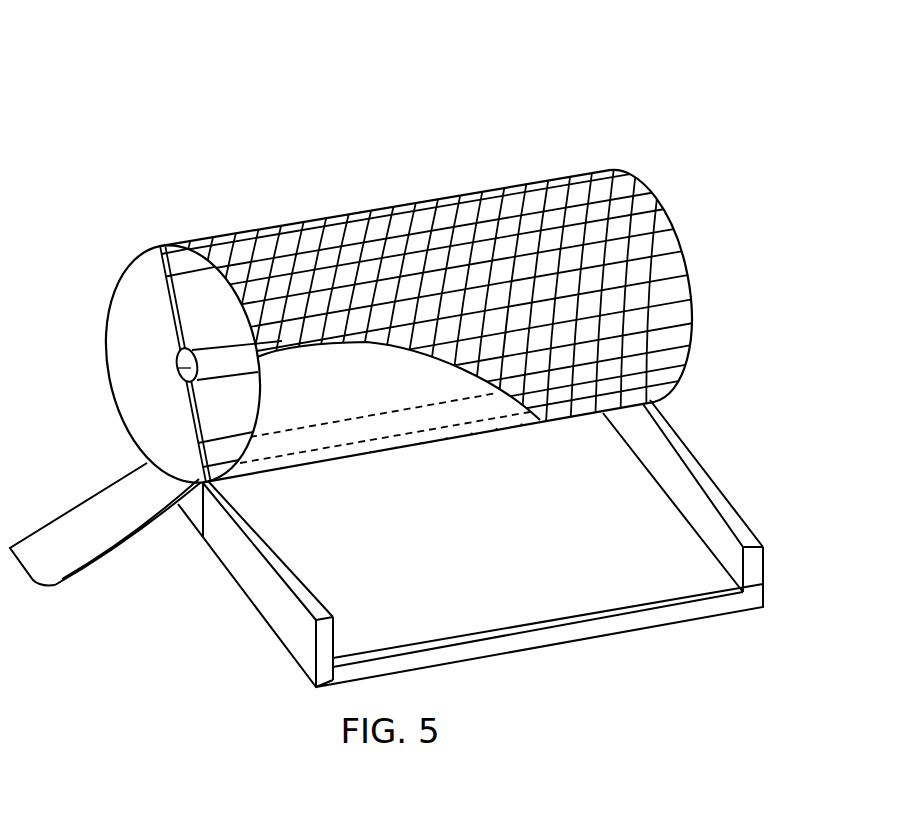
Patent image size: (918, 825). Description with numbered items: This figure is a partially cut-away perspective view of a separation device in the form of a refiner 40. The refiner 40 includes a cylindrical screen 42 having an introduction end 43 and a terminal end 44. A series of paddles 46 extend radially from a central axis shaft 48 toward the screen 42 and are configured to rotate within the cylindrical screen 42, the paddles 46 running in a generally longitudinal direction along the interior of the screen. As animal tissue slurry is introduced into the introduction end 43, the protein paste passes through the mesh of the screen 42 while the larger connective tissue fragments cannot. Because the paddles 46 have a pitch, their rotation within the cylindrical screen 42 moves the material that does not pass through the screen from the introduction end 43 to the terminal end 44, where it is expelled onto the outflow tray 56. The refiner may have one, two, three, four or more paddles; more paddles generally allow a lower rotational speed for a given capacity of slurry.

The refiner 40 is at (124, 138).
The cylindrical screen 42 is at (560, 188).
The introduction end 43 is at (690, 290).
The terminal end 44 is at (137, 294).
The paddles 46 is at (140, 442).
The central axis shaft 48 is at (190, 368).
The outflow tray 56 is at (120, 558).